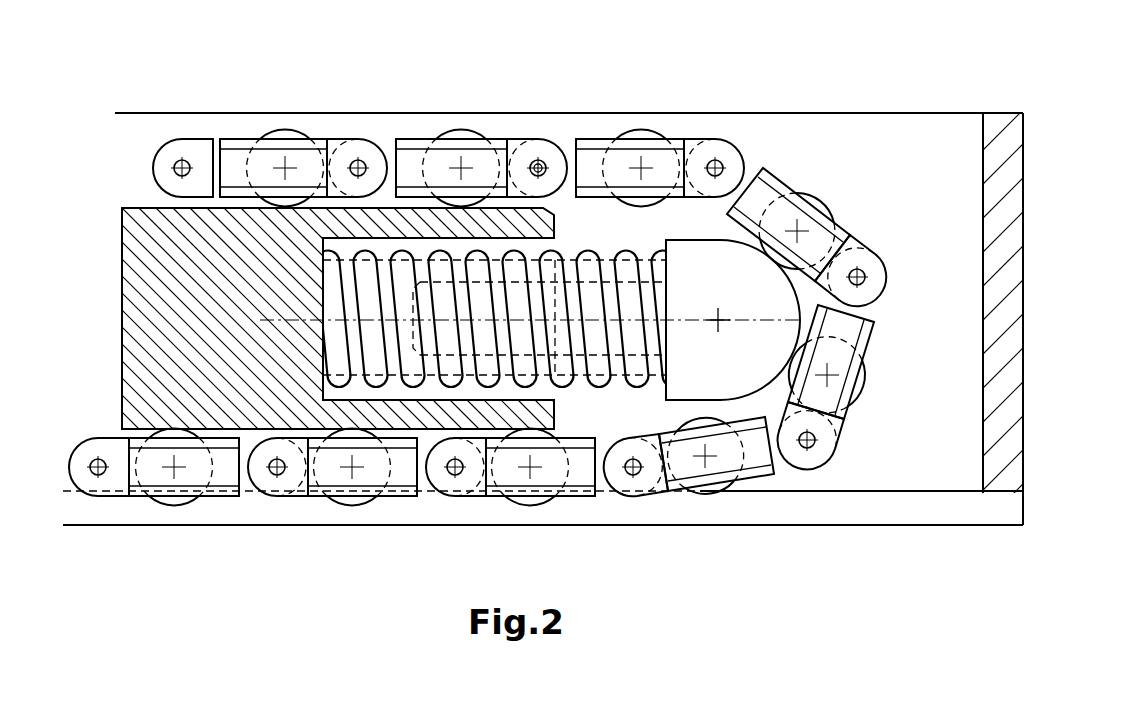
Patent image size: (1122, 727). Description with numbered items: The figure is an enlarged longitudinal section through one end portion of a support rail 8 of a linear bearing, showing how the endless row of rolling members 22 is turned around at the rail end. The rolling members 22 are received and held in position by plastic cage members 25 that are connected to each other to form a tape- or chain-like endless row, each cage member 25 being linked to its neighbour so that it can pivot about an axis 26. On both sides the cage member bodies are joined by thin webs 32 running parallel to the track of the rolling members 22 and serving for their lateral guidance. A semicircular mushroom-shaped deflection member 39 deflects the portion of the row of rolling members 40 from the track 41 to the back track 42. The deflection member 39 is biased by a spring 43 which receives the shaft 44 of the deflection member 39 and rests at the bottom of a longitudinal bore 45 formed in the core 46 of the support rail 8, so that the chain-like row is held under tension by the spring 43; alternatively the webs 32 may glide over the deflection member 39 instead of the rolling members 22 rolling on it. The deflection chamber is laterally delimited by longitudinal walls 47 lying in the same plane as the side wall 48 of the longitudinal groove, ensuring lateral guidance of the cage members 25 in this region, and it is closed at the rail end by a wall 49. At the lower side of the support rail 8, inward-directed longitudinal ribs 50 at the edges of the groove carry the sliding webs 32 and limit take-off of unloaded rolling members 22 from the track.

The support rail 8 is at (748, 122).
The rolling members 22 is at (457, 140).
The cage members 25 is at (403, 140).
The axis 26 is at (538, 162).
The webs 32 is at (830, 420).
The deflection member 39 is at (727, 378).
The portion of the row of rolling members 40 is at (802, 182).
The track 41 is at (232, 429).
The back track 42 is at (140, 205).
The spring 43 is at (607, 380).
The shaft 44 is at (585, 350).
The longitudinal bore 45 is at (372, 396).
The core 46 is at (305, 403).
The longitudinal walls 47 is at (890, 152).
The side wall 48 is at (185, 128).
The wall 49 is at (1003, 262).
The longitudinal ribs 50 is at (122, 508).